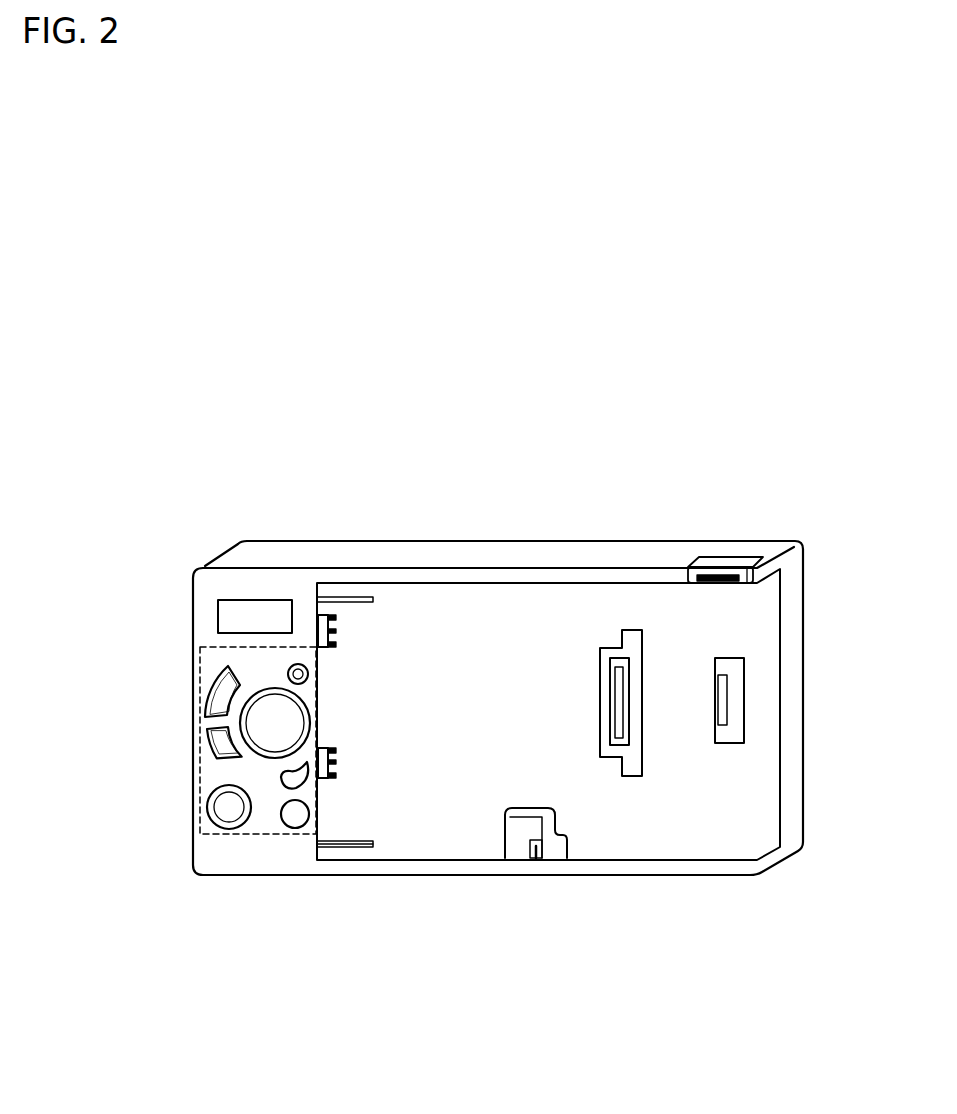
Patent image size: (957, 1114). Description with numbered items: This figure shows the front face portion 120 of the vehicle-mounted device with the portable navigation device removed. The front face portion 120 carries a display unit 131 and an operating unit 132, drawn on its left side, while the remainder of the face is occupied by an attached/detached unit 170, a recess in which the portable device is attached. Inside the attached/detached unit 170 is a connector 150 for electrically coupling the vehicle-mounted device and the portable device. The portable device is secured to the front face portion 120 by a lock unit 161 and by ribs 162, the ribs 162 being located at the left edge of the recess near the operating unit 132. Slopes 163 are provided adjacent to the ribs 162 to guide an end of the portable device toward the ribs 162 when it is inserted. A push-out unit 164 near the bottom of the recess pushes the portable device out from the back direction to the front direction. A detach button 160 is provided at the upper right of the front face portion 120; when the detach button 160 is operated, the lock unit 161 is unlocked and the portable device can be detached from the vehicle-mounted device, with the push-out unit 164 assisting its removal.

The front face portion 120 is at (243, 557).
The display unit 131 is at (227, 618).
The operating unit 132 is at (268, 835).
The connector 150 is at (620, 692).
The detach button 160 is at (718, 570).
The lock unit 161 is at (722, 703).
The ribs 162 is at (332, 623).
The slopes 163 is at (373, 599).
The push-out unit 164 is at (530, 825).
The attached/detached unit 170 is at (665, 828).